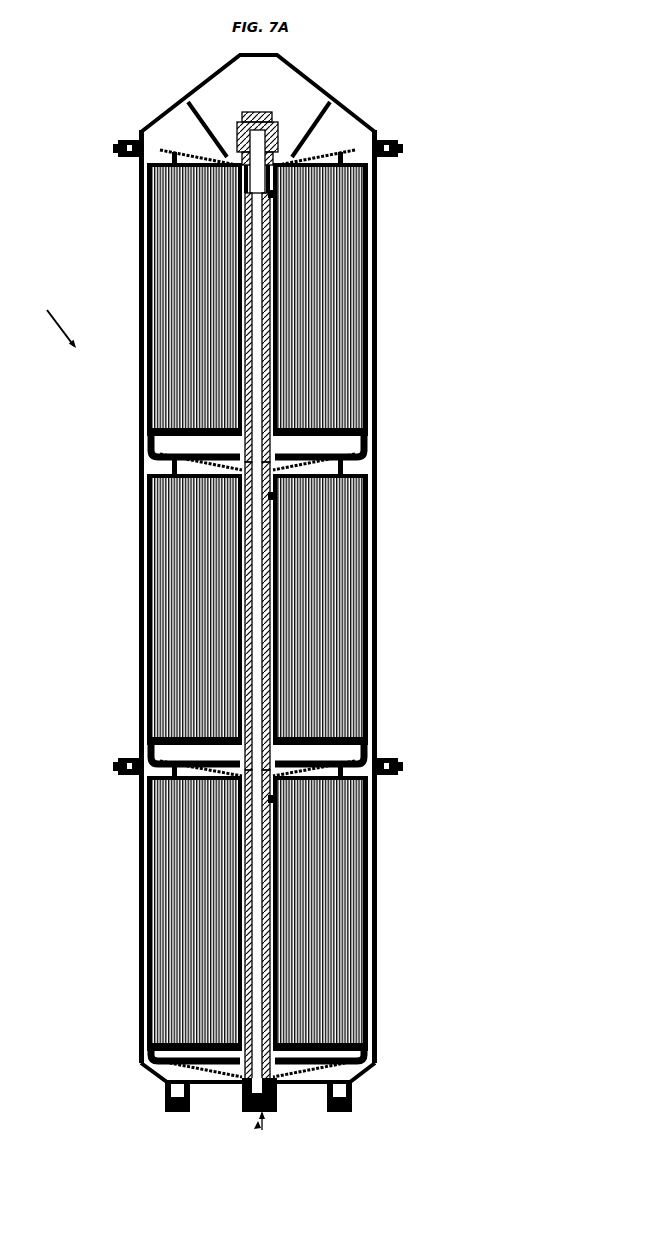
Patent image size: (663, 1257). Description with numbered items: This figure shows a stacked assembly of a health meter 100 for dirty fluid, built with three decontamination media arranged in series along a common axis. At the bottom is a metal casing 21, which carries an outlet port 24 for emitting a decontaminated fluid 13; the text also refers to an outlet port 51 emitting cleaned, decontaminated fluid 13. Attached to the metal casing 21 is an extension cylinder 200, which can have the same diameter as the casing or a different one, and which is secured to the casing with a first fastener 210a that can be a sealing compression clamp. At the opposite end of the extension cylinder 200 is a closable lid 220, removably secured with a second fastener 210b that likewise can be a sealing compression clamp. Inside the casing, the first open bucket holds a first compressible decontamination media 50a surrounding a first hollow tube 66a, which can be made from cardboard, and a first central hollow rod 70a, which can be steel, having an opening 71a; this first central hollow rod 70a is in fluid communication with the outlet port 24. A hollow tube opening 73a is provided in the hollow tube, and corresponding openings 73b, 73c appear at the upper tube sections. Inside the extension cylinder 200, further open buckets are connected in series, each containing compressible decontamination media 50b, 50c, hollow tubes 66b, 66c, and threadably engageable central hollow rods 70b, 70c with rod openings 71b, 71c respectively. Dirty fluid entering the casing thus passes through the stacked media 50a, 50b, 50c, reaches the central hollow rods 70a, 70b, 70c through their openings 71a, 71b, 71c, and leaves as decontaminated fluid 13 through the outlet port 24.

The health meter 100 is at (51, 319).
The extension cylinder 200 is at (382, 548).
The metal casing 21 is at (380, 833).
The closable lid 220 is at (297, 70).
The first fastener 210a is at (403, 760).
The second fastener 210b is at (403, 148).
The first compressible decontamination media 50a is at (170, 931).
The compressible decontamination media 50b is at (170, 631).
The compressible decontamination media 50c is at (170, 213).
The first hollow tube 66a is at (241, 1000).
The hollow tube 66b is at (241, 565).
The hollow tube 66c is at (241, 280).
The first central hollow rod 70a is at (272, 928).
The threadably engagable central hollow rod 70b is at (272, 627).
The threadably engagable central hollow rod 70c is at (270, 249).
The opening 71a is at (270, 801).
The rod opening 71b is at (275, 497).
The rod opening 71c is at (272, 196).
The hollow tube opening 73a is at (343, 1067).
The end cap 73b is at (358, 779).
The end cap 73c is at (320, 468).
The outlet port 51 is at (242, 1106).
The outlet port 24 is at (264, 1118).
The decontaminated fluid 13 is at (256, 1128).